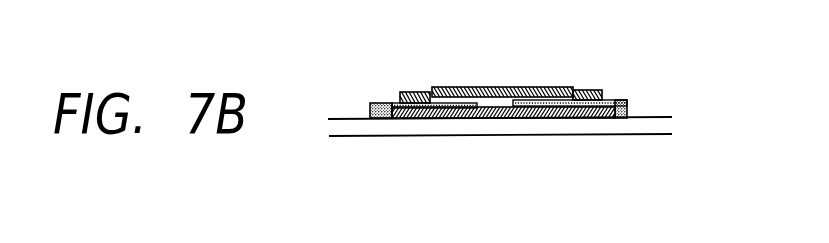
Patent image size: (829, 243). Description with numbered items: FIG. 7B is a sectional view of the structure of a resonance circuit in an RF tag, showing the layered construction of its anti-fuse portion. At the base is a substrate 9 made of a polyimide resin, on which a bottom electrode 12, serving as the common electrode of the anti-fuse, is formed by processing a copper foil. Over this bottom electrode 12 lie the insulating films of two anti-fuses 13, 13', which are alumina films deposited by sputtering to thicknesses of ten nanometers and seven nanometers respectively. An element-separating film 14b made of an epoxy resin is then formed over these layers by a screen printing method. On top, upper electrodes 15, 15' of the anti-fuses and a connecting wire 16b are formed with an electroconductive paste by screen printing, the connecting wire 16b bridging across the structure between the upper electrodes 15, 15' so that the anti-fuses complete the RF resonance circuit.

The substrate 9 is at (362, 128).
The bottom electrode 12 is at (582, 117).
The anti-fuse 13 is at (352, 74).
The anti-fuse 13' is at (652, 80).
The element-separating film 14b is at (508, 103).
The upper electrode 15 is at (404, 66).
The upper electrode 15' is at (607, 63).
The connecting wire 16b is at (487, 86).